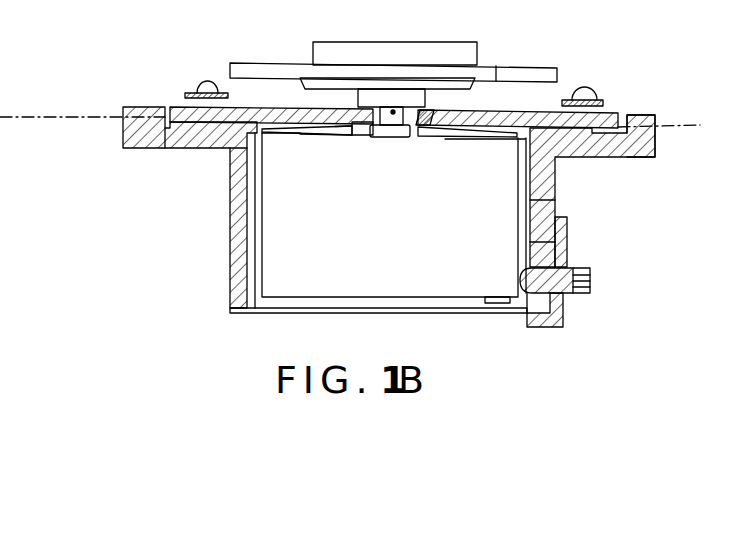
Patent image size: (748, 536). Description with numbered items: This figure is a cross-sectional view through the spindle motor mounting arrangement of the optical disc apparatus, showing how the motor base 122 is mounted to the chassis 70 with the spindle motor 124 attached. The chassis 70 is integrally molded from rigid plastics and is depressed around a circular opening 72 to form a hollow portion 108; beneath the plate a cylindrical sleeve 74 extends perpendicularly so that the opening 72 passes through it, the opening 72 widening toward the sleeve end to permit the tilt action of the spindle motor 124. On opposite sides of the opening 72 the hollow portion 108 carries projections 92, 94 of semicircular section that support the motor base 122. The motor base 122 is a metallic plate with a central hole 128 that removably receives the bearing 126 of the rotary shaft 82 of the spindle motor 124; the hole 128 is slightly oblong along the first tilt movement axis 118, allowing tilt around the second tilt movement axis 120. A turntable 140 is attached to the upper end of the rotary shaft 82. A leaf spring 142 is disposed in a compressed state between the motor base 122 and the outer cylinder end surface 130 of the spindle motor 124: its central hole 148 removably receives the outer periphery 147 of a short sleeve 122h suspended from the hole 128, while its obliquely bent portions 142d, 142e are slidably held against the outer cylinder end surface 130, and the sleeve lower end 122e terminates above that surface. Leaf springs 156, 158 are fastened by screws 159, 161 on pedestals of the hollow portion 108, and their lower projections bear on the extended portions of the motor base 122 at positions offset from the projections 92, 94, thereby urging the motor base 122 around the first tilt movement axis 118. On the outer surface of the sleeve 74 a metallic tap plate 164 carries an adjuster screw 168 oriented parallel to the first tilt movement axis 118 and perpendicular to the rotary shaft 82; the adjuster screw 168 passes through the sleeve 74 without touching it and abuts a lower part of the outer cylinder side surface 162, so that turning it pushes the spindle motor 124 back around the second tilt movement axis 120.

The chassis 70 is at (648, 145).
The circular opening 72 is at (262, 258).
The cylindrical sleeve 74 is at (232, 298).
The rotary shaft 82 is at (392, 110).
The projection 92 is at (210, 133).
The projection 94 is at (572, 135).
The hollow portion 108 is at (173, 127).
The first tilt movement axis 118 is at (697, 119).
The second tilt movement axis 120 is at (403, 107).
The motor base 122 is at (545, 108).
The sleeve lower end 122e is at (425, 140).
The short sleeve 122h is at (362, 138).
The spindle motor 124 is at (268, 241).
The bearing 126 is at (402, 137).
The hole 128 is at (383, 107).
The outer cylinder end surface 130 is at (343, 135).
The turntable 140 is at (531, 67).
The leaf spring 142 is at (391, 140).
The bent portion 142d is at (281, 136).
The bent portion 142e is at (503, 130).
The outer periphery 147 is at (315, 128).
The hole 148 is at (363, 137).
The leaf spring 156 is at (193, 95).
The leaf spring 158 is at (600, 101).
The screw 159 is at (205, 82).
The screw 161 is at (588, 94).
The outer cylinder side surface 162 is at (522, 200).
The tap plate 164 is at (563, 307).
The adjuster screw 168 is at (578, 268).